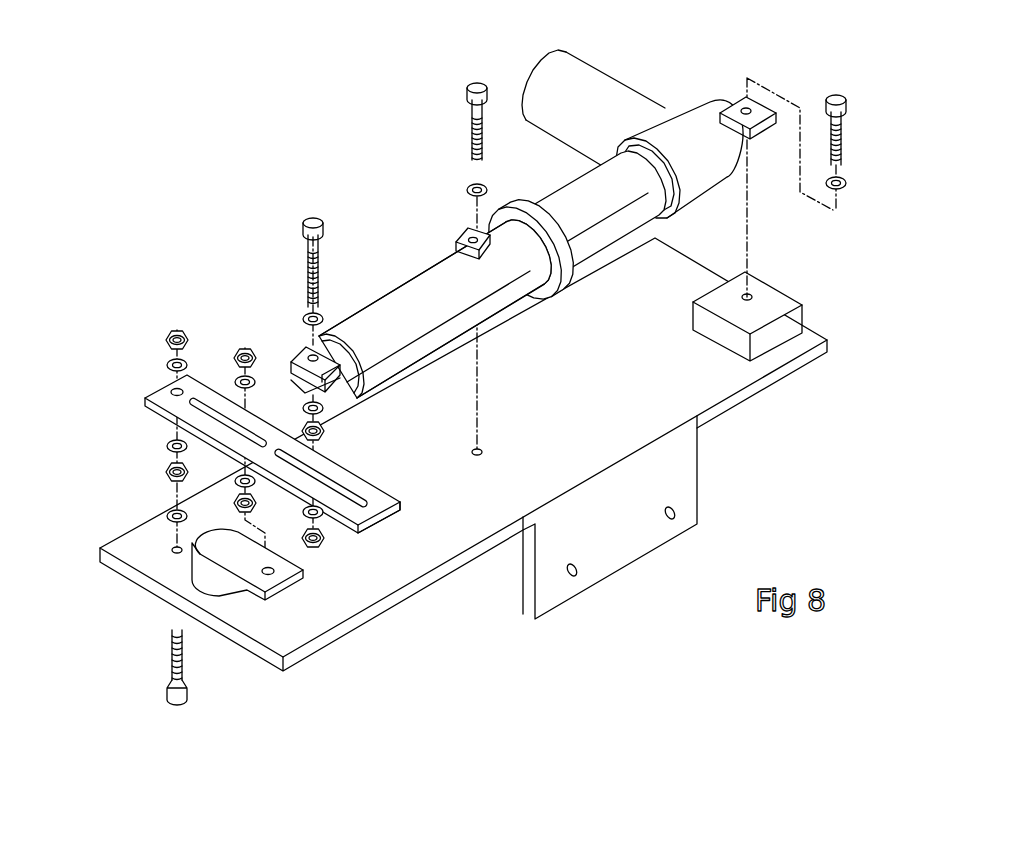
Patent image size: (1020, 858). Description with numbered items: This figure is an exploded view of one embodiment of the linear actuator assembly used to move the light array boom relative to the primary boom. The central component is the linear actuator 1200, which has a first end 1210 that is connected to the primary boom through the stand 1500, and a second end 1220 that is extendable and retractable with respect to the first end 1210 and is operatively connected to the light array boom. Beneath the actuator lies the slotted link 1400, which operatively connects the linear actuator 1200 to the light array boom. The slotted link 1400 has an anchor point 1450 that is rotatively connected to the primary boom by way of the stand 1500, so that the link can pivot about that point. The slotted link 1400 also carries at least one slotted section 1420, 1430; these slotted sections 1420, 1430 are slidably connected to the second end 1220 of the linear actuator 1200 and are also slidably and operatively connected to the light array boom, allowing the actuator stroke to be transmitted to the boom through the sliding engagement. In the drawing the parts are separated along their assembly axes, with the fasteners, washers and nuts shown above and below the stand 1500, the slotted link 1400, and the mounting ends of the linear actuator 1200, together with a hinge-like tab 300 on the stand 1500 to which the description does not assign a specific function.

The linear actuator 1200 is at (578, 183).
The first end 1210 is at (745, 103).
The second end 1220 is at (302, 356).
The slotted link 1400 is at (347, 470).
The slotted section 1420 is at (367, 493).
The slotted section 1430 is at (261, 441).
The anchor point 1450 is at (173, 390).
The stand 1500 is at (662, 388).
The hinge tab 300 is at (213, 547).